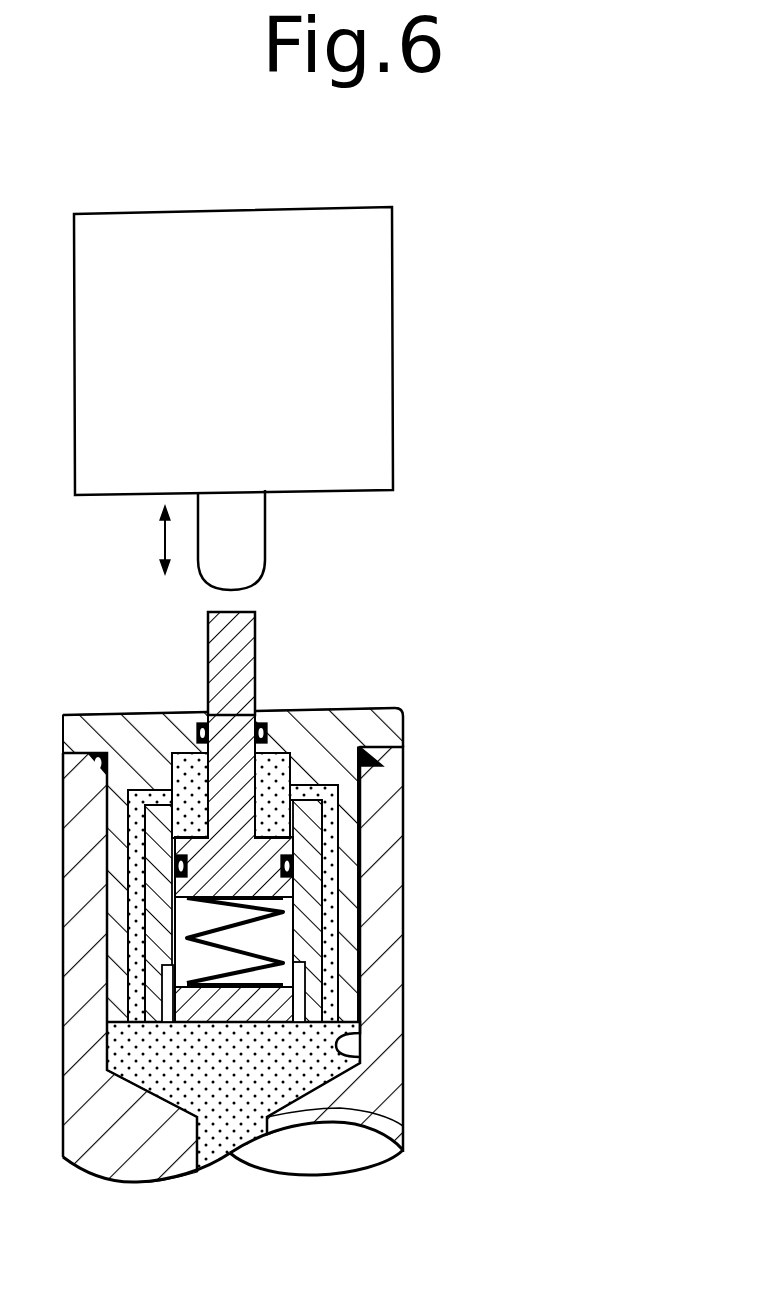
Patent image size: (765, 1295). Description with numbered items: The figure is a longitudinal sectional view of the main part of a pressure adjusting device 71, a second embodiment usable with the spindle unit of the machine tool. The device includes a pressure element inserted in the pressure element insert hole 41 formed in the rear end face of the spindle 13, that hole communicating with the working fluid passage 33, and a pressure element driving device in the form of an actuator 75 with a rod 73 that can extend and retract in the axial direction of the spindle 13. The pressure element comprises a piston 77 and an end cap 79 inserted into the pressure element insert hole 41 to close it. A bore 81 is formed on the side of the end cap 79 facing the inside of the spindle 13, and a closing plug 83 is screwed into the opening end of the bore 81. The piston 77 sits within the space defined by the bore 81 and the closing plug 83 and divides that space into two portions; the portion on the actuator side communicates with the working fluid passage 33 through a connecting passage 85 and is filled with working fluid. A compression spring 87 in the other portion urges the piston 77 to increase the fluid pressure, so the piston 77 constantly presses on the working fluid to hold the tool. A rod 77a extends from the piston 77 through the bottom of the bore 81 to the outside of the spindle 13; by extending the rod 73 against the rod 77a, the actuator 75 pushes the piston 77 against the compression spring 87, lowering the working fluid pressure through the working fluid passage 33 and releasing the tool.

The actuator 75 is at (393, 332).
The rod 73 is at (267, 538).
The pressure adjusting device 71 is at (547, 597).
The rod 77a is at (257, 643).
The bore 81 is at (272, 752).
The end cap 79 is at (393, 725).
The spindle 13 is at (388, 797).
The piston 77 is at (348, 810).
The connecting passage 85 is at (335, 940).
The compression spring 87 is at (315, 943).
The closing plug 83 is at (300, 1012).
The pressure element insert hole 41 is at (363, 1057).
The working fluid passage 33 is at (403, 1126).